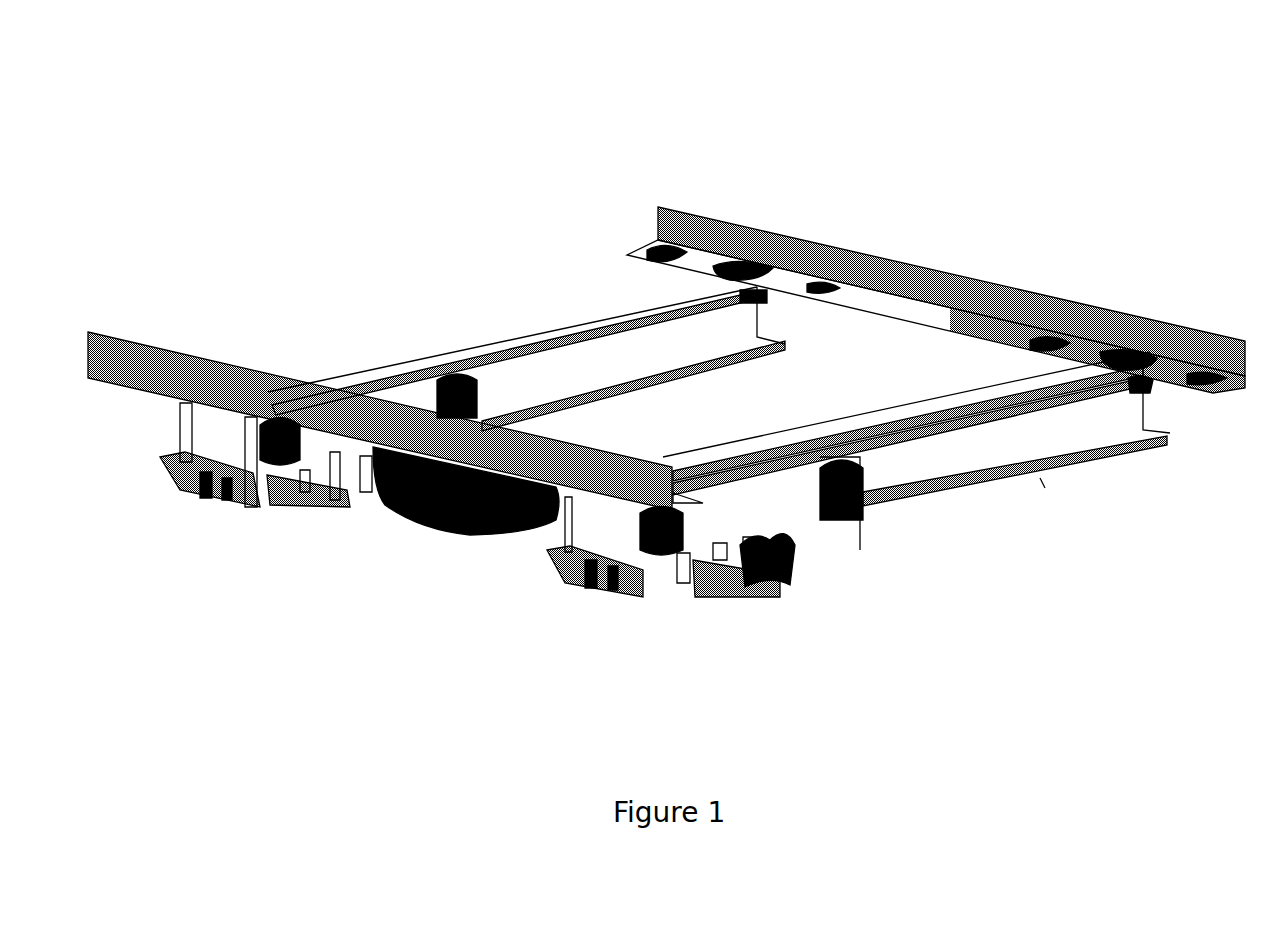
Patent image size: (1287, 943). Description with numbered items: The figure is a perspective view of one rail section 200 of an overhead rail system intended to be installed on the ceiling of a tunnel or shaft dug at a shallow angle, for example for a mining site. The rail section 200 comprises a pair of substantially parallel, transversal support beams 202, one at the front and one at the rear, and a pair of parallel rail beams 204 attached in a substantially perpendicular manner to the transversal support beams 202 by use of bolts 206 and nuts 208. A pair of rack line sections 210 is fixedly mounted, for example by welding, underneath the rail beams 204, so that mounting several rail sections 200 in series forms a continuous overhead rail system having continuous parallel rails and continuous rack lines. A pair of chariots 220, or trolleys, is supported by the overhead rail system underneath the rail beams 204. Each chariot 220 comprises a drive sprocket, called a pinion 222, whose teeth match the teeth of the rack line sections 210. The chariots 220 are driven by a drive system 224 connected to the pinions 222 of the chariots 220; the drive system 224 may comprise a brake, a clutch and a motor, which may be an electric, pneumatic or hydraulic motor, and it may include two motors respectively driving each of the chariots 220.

The rail section 200 is at (937, 69).
The transversal support beam 202 is at (190, 353).
The rail beam 204 is at (548, 322).
The bolt 206 is at (1153, 350).
The nut 208 is at (1147, 395).
The rack line section 210 is at (185, 495).
The chariot 220 is at (320, 483).
The pinion 222 is at (770, 588).
The drive system 224 is at (455, 535).